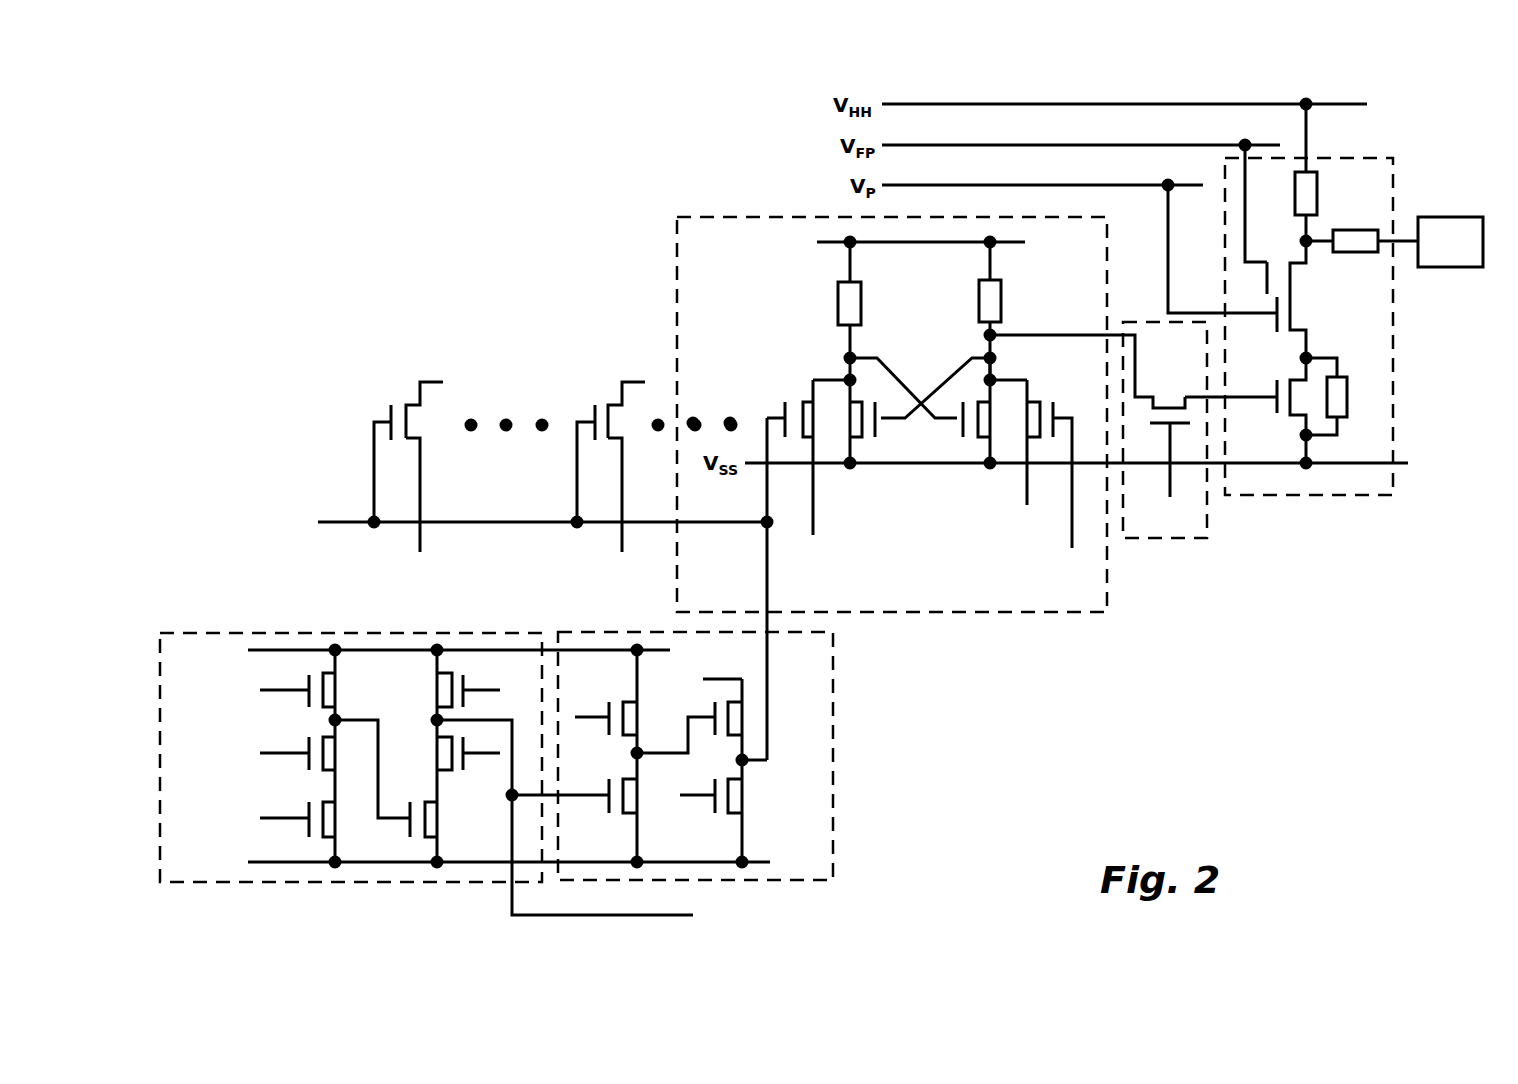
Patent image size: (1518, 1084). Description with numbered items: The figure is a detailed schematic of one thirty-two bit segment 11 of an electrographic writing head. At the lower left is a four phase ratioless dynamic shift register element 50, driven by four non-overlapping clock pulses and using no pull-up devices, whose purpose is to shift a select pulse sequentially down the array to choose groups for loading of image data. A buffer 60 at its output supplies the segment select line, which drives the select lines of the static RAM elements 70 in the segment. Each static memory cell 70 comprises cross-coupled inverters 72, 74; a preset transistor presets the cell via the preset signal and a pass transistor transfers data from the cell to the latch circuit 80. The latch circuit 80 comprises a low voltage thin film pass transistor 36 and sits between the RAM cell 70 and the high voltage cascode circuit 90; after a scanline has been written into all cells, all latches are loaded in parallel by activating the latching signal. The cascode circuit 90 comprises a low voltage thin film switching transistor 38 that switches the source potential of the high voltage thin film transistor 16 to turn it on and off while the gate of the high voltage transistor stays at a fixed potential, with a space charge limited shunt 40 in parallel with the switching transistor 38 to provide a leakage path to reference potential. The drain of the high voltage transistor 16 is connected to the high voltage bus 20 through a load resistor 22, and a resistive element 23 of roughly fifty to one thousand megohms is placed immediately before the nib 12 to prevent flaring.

The thirty-two bit segment 11 is at (417, 240).
The nib 12 is at (1430, 268).
The high voltage thin film transistor 16 is at (1306, 298).
The high voltage bus 20 is at (1367, 104).
The load resistor 22 is at (1308, 183).
The resistive element 23 is at (1358, 241).
The low voltage thin film pass transistor 36 is at (1171, 396).
The low voltage thin film switching transistor 38 is at (1286, 421).
The space charge limited shunt 40 is at (1337, 397).
The dynamic shift register element 50 is at (378, 873).
The buffer 60 is at (820, 797).
The static RAM element 70 is at (892, 436).
The cross-coupled inverter 72 is at (872, 441).
The cross-coupled inverter 74 is at (969, 441).
The latch circuit 80 is at (1195, 532).
The high voltage cascode circuit 90 is at (1357, 490).